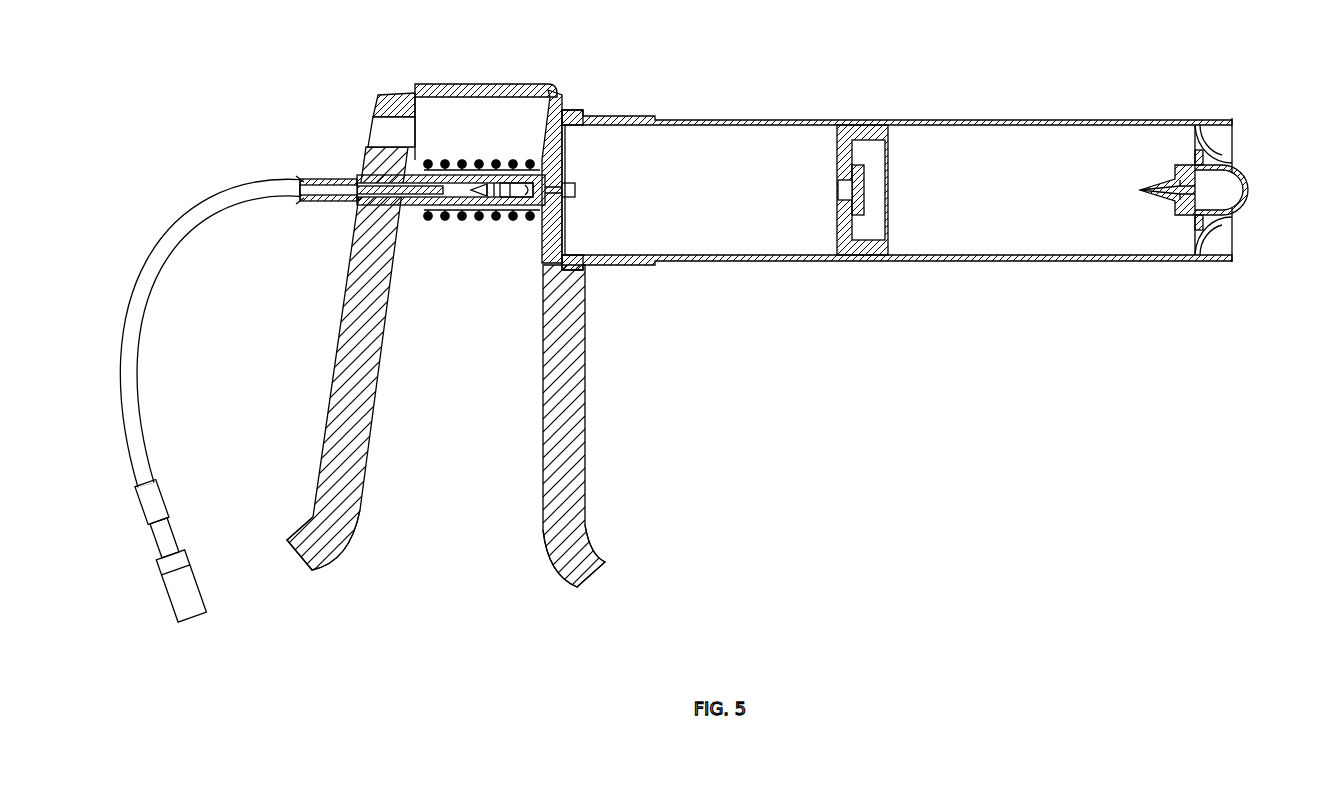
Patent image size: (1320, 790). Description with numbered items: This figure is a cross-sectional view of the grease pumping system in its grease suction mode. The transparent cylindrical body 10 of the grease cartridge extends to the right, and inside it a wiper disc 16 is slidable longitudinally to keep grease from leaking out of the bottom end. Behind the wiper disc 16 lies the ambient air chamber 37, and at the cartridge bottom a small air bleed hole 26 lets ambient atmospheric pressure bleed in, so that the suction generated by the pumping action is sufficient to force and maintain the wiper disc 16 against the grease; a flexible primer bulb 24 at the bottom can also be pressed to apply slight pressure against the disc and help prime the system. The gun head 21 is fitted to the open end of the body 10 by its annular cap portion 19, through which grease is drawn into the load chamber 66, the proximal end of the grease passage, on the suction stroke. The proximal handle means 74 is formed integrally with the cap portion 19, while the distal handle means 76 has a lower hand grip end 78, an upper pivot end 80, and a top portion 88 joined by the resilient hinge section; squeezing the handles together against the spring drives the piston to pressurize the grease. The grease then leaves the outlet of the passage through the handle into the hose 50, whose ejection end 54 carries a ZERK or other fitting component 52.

The cylindrical body 10 is at (955, 106).
The wiper disc 16 is at (858, 215).
The annular cap portion 19 is at (576, 108).
The gun head 21 is at (493, 76).
The flexible primer bulb 24 is at (1240, 171).
The air bleed hole 26 is at (1247, 190).
The ambient air chamber 37 is at (1030, 208).
The hose 50 is at (208, 208).
The fitting component 52 is at (195, 600).
The ejection end 54 is at (182, 497).
The load chamber 66 is at (512, 200).
The proximal handle means 74 is at (585, 355).
The distal handle means 76 is at (365, 347).
The lower hand grip end 78 is at (318, 470).
The upper pivot end 80 is at (556, 98).
The top portion of handle means 88 is at (378, 95).